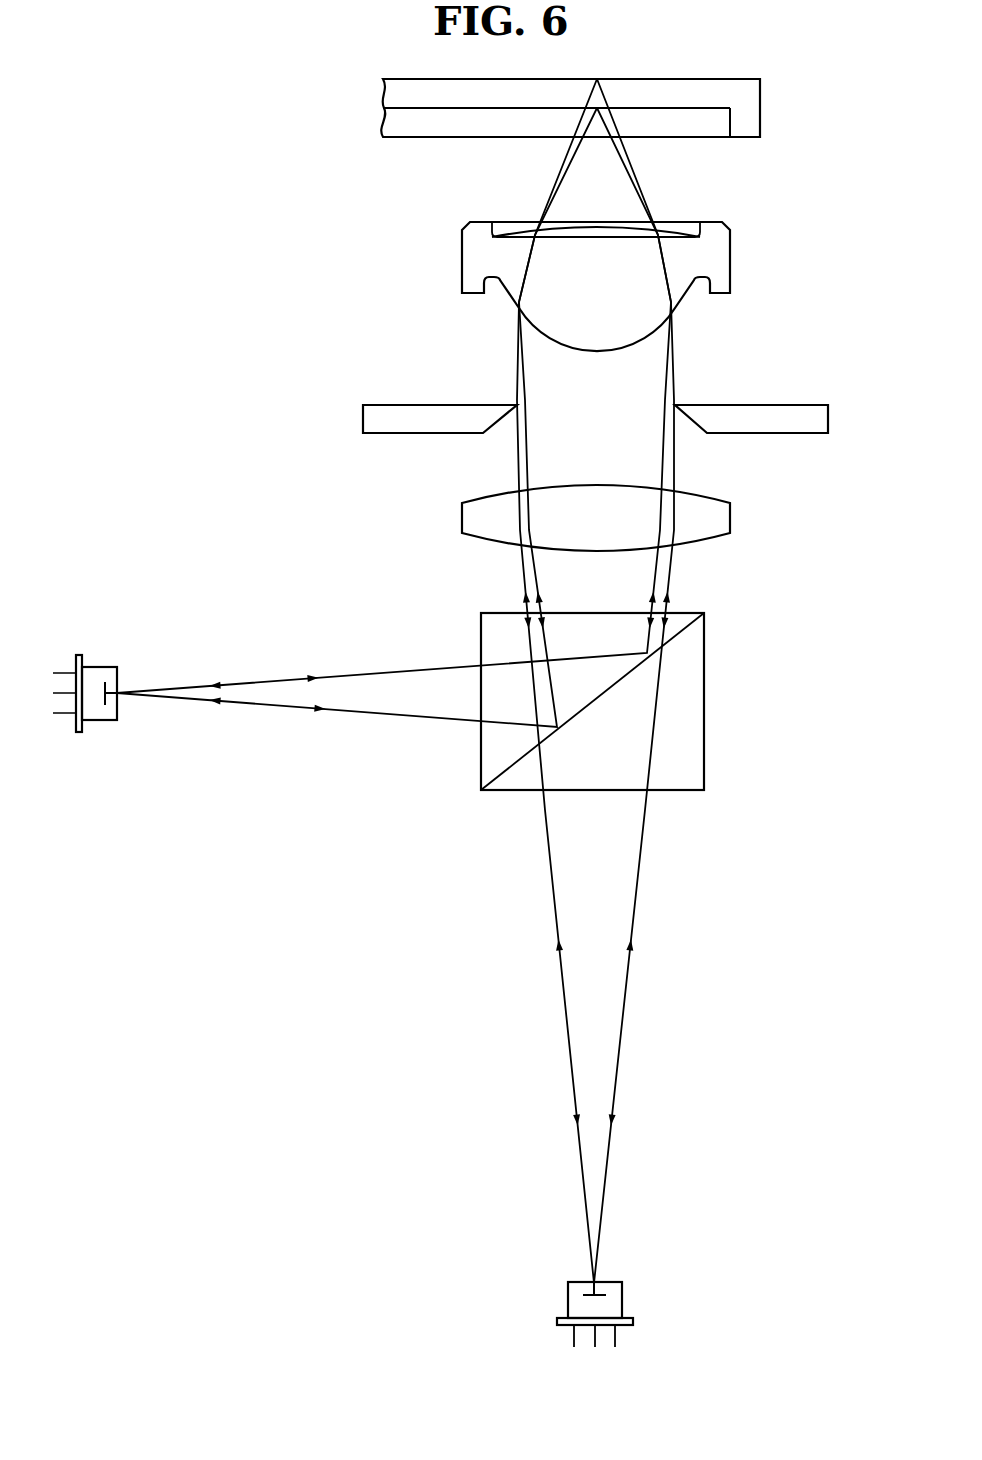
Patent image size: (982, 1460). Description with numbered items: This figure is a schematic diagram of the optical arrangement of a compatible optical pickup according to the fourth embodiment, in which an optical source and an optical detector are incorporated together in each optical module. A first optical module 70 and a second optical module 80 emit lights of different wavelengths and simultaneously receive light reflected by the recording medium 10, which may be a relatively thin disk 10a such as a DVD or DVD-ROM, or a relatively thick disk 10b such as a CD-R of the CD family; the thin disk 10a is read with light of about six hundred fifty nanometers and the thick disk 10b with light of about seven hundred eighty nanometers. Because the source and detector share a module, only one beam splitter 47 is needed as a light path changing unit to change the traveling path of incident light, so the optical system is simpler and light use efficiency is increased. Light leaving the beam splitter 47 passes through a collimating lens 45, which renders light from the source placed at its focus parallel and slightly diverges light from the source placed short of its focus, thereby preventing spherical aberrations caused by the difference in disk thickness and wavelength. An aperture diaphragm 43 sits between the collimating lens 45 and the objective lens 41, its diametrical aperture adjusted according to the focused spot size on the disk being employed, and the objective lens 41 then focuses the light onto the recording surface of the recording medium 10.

The recording medium 10 is at (780, 103).
The relatively thin disk 10a is at (390, 127).
The relatively thick disk 10b is at (407, 90).
The objective lens 41 is at (730, 255).
The aperture diaphragm 43 is at (828, 417).
The collimating lens 45 is at (730, 517).
The beam splitter 47 is at (704, 613).
The first optical module 70 is at (622, 1300).
The second optical module 80 is at (97, 720).